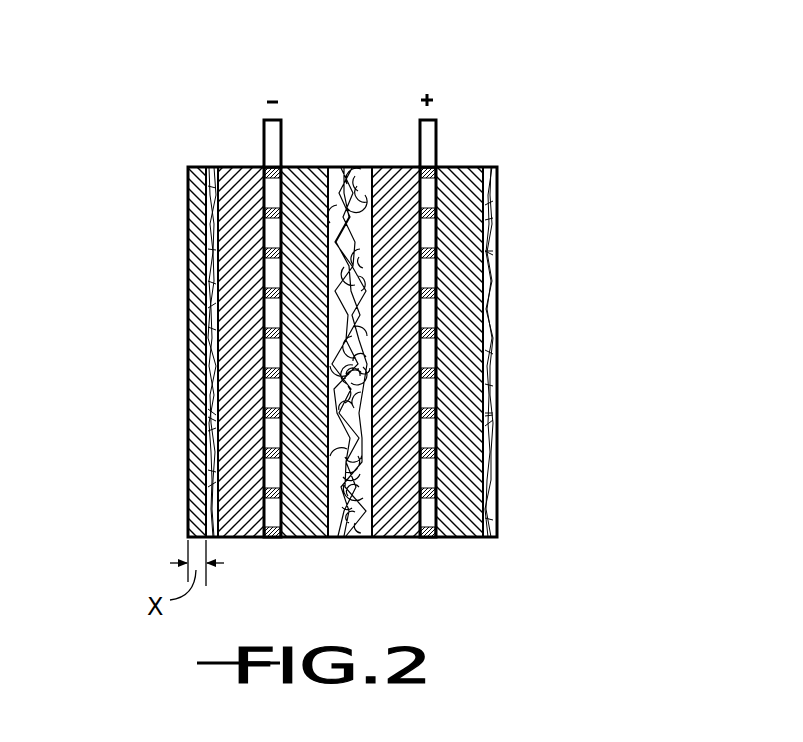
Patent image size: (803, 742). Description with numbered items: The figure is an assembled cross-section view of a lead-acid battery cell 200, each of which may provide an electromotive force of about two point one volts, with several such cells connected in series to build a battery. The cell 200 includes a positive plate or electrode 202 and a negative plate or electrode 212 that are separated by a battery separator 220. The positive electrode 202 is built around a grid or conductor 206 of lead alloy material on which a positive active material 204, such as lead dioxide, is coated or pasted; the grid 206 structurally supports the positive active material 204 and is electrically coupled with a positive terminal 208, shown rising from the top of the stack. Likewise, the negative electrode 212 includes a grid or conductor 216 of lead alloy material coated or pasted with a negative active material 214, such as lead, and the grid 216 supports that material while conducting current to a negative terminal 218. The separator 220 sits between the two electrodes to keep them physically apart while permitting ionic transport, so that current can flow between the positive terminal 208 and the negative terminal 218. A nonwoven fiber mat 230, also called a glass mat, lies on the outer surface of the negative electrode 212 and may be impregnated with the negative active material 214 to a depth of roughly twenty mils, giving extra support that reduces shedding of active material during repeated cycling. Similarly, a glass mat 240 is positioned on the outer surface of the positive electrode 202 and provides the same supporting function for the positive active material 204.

The lead-acid battery cell 200 is at (566, 170).
The positive electrode 202 is at (462, 110).
The positive active material 204 is at (395, 539).
The grid 206 is at (437, 258).
The positive terminal 208 is at (437, 150).
The negative electrode 212 is at (250, 108).
The negative active material 214 is at (250, 540).
The grid 216 is at (265, 293).
The negative terminal 218 is at (263, 148).
The battery separator 220 is at (353, 538).
The nonwoven fiber mat 230 is at (221, 539).
The glass mat 240 is at (500, 403).